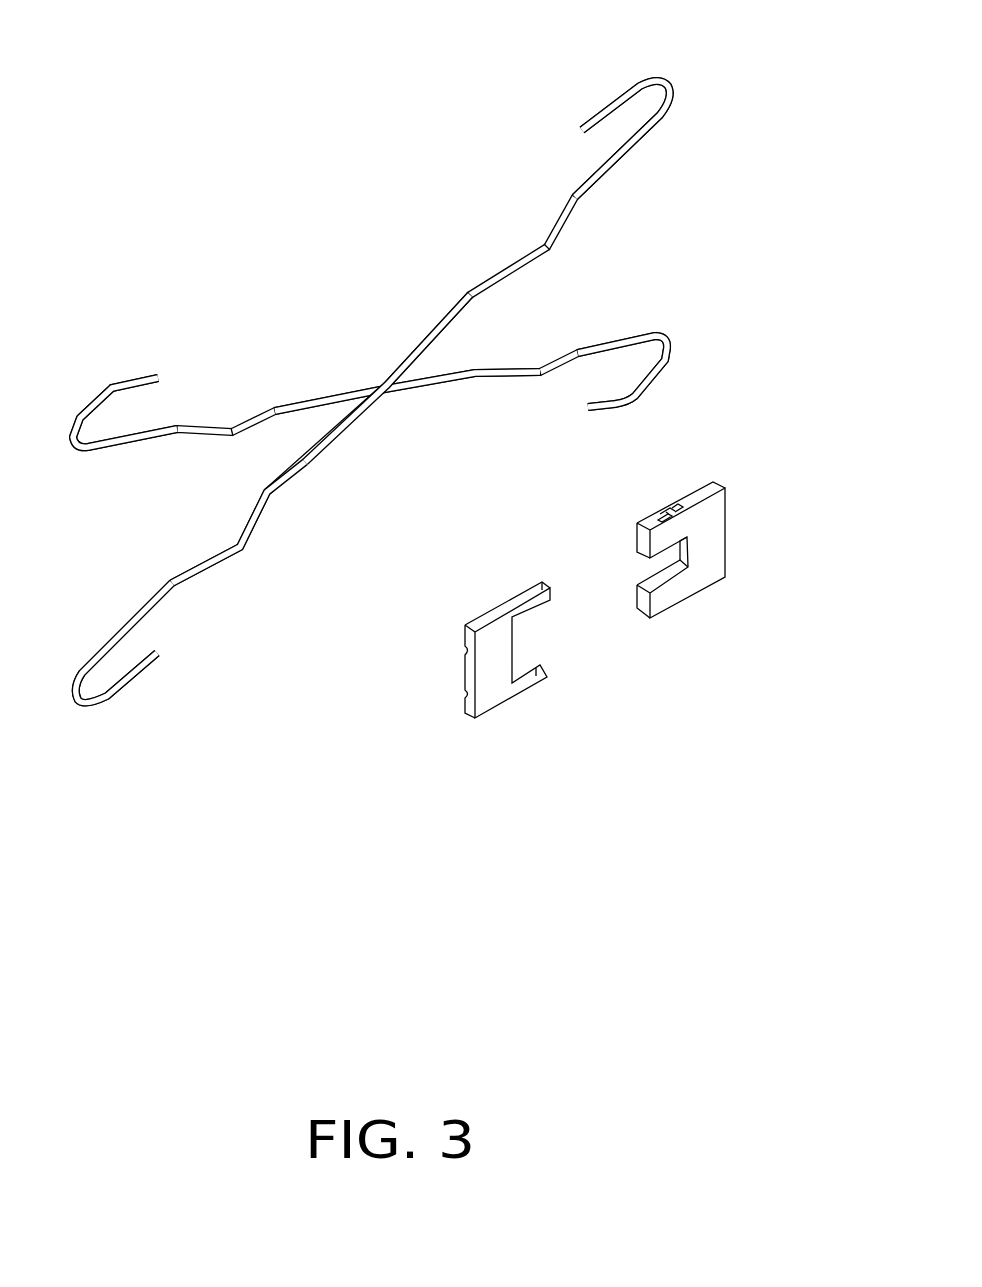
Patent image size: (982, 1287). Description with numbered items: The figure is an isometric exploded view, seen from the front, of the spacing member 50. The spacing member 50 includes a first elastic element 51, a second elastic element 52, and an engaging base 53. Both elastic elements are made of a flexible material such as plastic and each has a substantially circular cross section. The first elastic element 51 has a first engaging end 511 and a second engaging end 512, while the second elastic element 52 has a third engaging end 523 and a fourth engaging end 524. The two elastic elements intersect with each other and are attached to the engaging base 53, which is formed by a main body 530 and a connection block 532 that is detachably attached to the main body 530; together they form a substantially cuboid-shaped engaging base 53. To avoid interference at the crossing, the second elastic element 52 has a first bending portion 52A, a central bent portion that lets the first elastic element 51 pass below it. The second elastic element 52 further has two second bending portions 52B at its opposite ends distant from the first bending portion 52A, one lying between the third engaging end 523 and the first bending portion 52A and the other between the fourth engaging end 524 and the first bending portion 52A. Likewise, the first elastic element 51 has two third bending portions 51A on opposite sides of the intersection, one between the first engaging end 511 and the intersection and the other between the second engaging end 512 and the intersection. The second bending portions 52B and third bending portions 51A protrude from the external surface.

The spacing member 50 is at (212, 60).
The first elastic element 51 is at (177, 413).
The first engaging end 511 is at (133, 376).
The second engaging end 512 is at (633, 400).
The third bending portion 51A is at (542, 378).
The second elastic element 52 is at (520, 237).
The third engaging end 523 is at (618, 103).
The fourth engaging end 524 is at (128, 680).
The first bending portion 52A is at (378, 392).
The second bending portion 52B is at (241, 553).
The engaging base 53 is at (818, 623).
The main body 530 is at (698, 572).
The connection block 532 is at (487, 683).